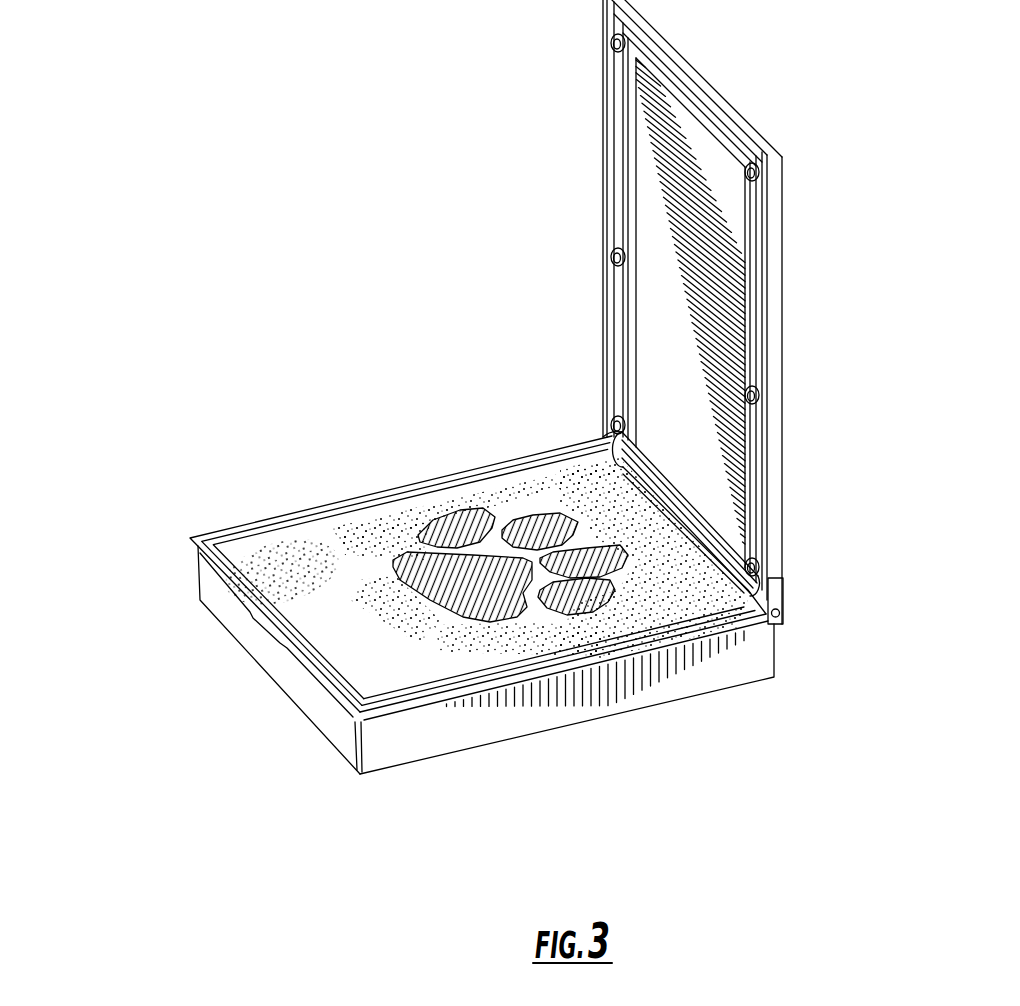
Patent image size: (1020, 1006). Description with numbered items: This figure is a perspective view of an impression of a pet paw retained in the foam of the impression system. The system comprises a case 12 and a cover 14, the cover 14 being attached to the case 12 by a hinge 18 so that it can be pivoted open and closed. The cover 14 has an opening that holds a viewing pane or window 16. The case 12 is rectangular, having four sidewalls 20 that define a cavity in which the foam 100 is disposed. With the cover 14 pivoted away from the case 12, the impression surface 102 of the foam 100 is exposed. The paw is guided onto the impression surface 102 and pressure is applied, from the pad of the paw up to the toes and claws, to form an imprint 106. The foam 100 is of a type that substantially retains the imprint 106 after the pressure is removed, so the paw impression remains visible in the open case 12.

The case 12 is at (135, 550).
The cover 14 is at (808, 225).
The window 16 is at (726, 190).
The hinge 18 is at (787, 628).
The sidewalls 20 is at (413, 740).
The foam 100 is at (582, 494).
The impression surface 102 is at (278, 547).
The imprint 106 is at (438, 567).